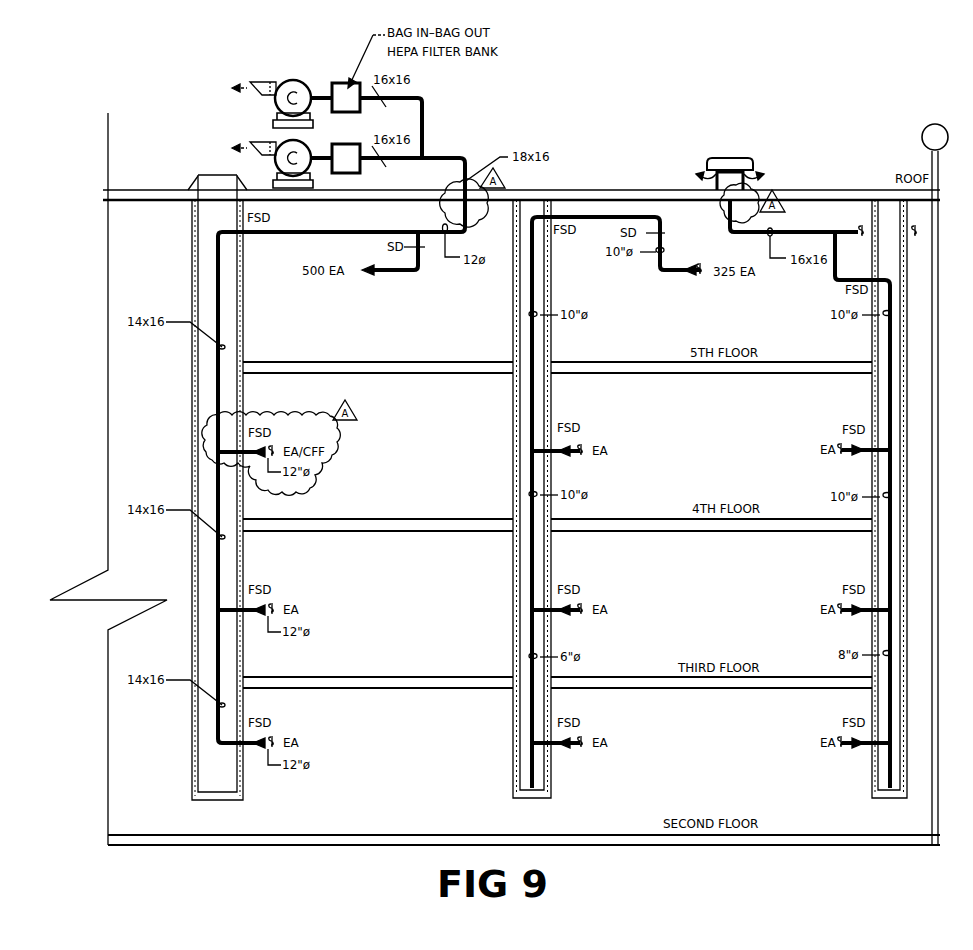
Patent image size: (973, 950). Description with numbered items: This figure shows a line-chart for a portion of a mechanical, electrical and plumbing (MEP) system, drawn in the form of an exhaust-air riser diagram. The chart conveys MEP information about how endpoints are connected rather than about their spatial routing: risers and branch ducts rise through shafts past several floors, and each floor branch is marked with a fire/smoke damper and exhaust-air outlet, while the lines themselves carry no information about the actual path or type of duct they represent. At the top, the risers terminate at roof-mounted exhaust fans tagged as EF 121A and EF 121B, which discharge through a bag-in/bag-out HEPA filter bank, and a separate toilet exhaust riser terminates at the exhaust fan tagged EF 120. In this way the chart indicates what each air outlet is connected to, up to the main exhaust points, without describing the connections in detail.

The exhaust fan EF- 121A is at (168, 89).
The exhaust fan EF- 121B is at (168, 147).
The toilet exhaust fan EF- 120 is at (757, 76).